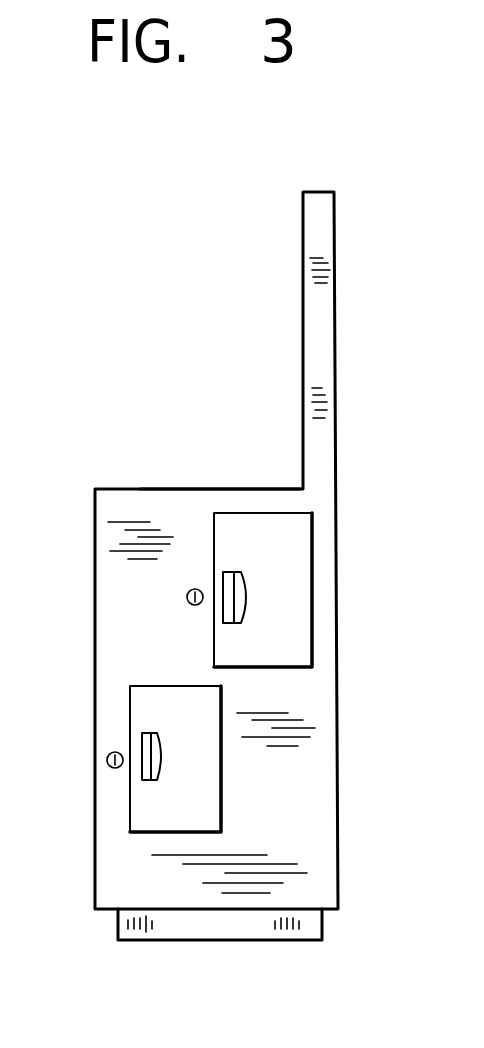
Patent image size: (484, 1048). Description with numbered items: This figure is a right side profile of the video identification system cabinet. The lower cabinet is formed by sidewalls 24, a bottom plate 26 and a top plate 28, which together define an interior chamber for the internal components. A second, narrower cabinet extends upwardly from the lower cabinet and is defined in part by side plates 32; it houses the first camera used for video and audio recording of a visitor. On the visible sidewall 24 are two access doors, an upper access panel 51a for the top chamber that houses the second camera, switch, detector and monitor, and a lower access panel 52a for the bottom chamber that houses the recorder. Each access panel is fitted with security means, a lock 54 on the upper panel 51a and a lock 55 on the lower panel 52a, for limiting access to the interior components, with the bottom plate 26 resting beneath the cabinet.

The sidewalls 24 is at (190, 662).
The bottom plate 26 is at (107, 912).
The top plate 28 is at (233, 488).
The side plates 32 is at (320, 298).
The access panel 51a is at (290, 556).
The access panel 52a is at (200, 800).
The lock 54 is at (187, 597).
The lock 55 is at (107, 760).